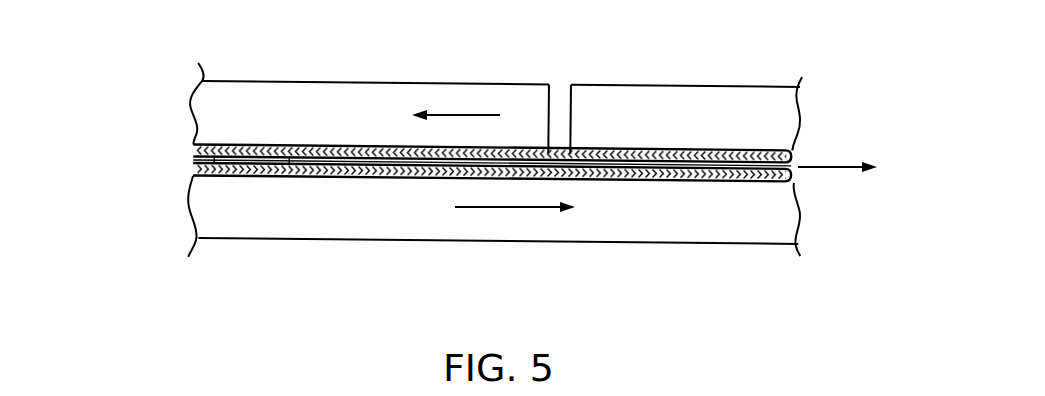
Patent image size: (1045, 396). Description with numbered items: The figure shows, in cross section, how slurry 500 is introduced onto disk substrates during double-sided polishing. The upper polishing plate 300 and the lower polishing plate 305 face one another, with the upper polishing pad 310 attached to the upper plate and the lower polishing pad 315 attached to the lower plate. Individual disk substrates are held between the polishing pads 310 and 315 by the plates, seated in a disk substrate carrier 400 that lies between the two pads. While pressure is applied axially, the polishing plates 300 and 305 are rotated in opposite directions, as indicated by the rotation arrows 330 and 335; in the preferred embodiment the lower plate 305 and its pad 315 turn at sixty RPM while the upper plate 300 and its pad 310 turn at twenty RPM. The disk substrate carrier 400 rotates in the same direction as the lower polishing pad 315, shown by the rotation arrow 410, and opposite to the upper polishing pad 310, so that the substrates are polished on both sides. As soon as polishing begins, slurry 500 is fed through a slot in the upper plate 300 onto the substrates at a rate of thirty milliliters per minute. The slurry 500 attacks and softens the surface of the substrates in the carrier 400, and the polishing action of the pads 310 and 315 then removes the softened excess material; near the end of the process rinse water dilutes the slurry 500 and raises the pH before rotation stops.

The upper polishing plate 300 is at (300, 98).
The lower polishing plate 305 is at (303, 218).
The upper polishing pad 310 is at (791, 157).
The lower polishing pad 315 is at (555, 100).
The rotation arrow 330 is at (456, 126).
The rotation arrow 335 is at (515, 218).
The disk substrate carrier 400 is at (420, 173).
The rotation arrow 410 is at (858, 171).
The slurry 500 is at (560, 91).